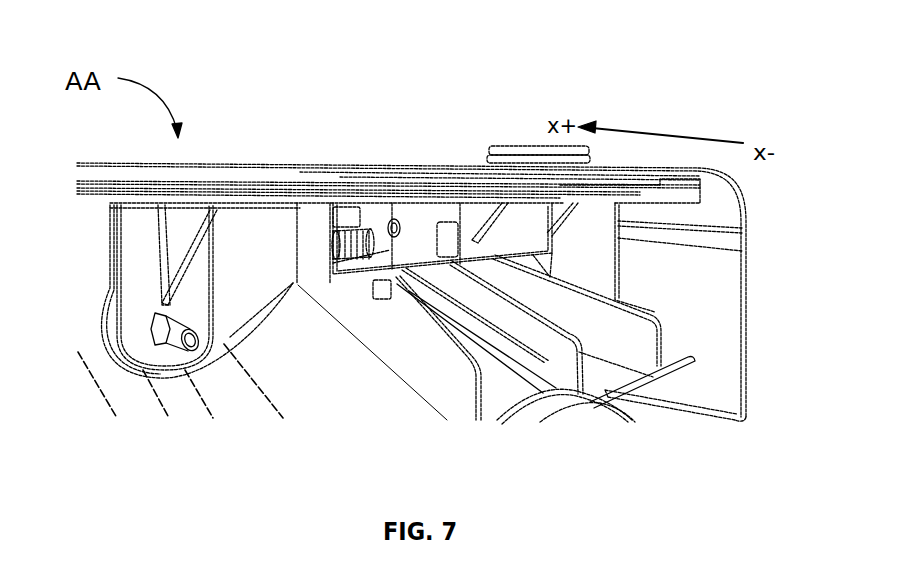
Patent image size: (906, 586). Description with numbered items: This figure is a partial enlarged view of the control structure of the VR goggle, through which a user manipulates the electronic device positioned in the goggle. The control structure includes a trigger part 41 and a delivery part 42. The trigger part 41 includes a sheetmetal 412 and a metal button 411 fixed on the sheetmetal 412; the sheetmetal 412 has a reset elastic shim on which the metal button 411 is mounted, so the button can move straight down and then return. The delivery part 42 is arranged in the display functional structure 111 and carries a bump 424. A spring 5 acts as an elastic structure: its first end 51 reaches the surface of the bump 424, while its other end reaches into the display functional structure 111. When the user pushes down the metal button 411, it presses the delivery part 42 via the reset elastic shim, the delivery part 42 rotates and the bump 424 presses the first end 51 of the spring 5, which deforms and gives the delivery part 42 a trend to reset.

The trigger part 41 is at (411, 96).
The metal button 411 is at (490, 145).
The sheetmetal 412 is at (443, 165).
The bump 424 is at (377, 210).
The delivery part 42 is at (242, 282).
The spring 5 is at (397, 233).
The first end 51 is at (470, 262).
The display functional structure 111 is at (240, 393).